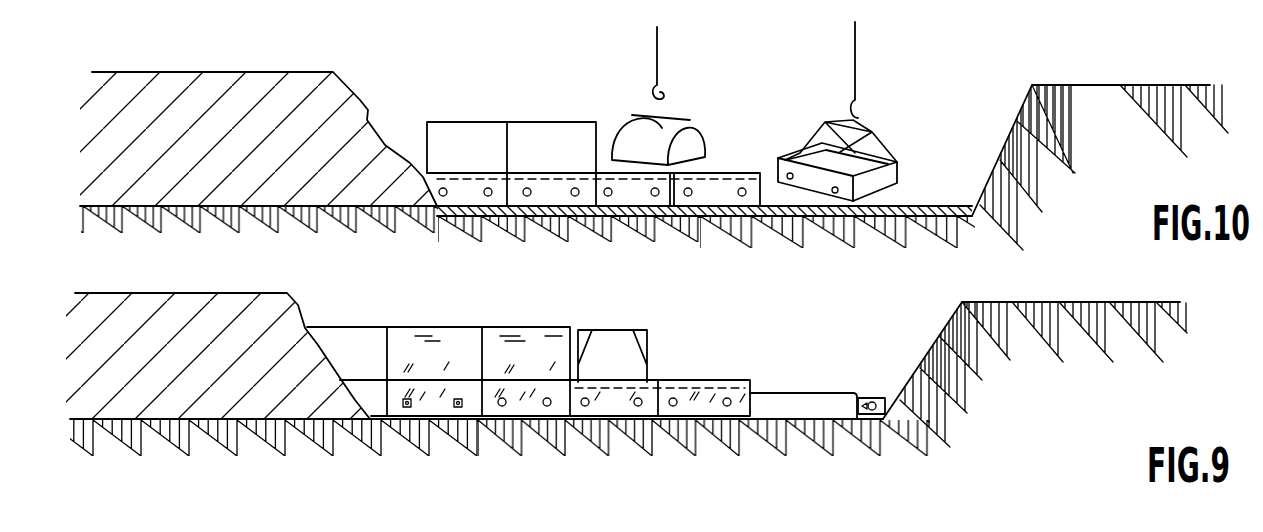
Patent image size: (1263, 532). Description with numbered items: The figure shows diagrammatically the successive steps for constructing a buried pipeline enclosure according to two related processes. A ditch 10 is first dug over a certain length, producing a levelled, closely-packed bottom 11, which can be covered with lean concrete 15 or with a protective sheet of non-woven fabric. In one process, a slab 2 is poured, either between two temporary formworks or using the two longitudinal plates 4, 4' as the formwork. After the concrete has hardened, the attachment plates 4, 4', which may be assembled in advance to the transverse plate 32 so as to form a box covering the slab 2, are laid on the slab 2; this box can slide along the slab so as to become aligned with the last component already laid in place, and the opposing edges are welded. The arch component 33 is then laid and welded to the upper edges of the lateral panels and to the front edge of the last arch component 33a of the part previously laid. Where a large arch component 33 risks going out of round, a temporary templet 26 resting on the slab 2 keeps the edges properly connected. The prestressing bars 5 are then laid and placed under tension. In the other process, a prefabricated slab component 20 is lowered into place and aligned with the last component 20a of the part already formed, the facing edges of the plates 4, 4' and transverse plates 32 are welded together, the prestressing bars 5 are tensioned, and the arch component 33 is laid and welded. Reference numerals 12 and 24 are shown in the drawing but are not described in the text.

In FIG. 9, the slab 2 is at (798, 405).
In FIG. 9, the longitudinal plate 4 is at (614, 458).
In FIG. 10, the longitudinal plate 4 is at (803, 153).
In FIG. 10, the longitudinal plate 4' is at (891, 120).
In FIG. 9, the prestressing bars 5 is at (458, 408).
In FIG. 10, the prestressing bars 5 is at (657, 195).
In FIG. 9, the ditch 10 is at (898, 362).
In FIG. 10, the ditch 10 is at (975, 150).
In FIG. 9, the bottom 11 is at (802, 432).
In FIG. 10, the bottom 11 is at (862, 215).
In FIG. 9, the excavated earth bank 12 is at (228, 322).
In FIG. 10, the excavated earth bank 12 is at (247, 92).
In FIG. 10, the lean concrete 15 is at (917, 213).
In FIG. 10, the slab component 20 is at (910, 161).
In FIG. 9, the last component 20a is at (608, 405).
In FIG. 10, the last component 20a is at (720, 192).
In FIG. 9, the drive unit 24 is at (876, 403).
In FIG. 9, the temporary templet 26 is at (647, 362).
In FIG. 9, the transverse plate 32 is at (685, 387).
In FIG. 10, the transverse plate 32 is at (817, 165).
In FIG. 10, the arch component 33 is at (660, 133).
In FIG. 9, the last arch component 33a is at (533, 343).
In FIG. 10, the last arch component 33a is at (557, 135).